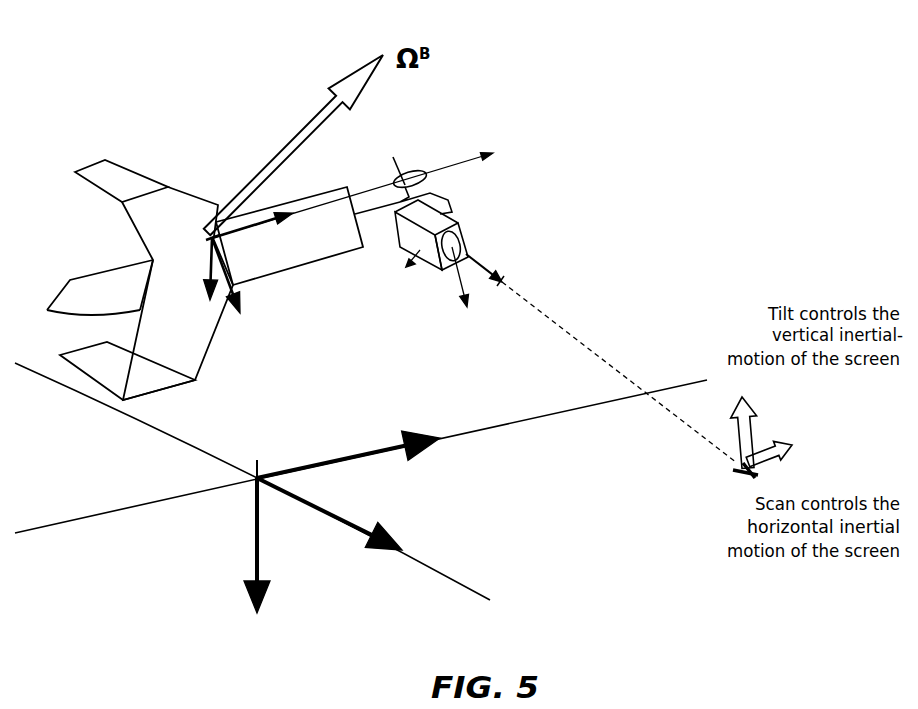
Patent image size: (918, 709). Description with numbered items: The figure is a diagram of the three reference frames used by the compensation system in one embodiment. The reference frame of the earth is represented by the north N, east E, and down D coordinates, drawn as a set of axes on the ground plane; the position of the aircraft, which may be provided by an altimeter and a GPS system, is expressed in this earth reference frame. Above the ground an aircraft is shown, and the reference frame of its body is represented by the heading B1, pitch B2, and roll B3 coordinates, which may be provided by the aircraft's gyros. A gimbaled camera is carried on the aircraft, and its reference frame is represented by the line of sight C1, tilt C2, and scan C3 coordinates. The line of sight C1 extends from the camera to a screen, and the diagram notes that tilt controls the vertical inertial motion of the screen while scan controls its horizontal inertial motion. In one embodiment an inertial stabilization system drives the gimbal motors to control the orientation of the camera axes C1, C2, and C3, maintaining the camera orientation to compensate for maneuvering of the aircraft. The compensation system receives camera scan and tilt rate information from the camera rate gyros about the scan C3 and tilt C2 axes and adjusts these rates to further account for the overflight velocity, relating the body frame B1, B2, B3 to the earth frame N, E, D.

The heading coordinate B1 is at (266, 221).
The pitch coordinate B2 is at (203, 290).
The roll coordinate B3 is at (238, 295).
The line of sight coordinate C1 is at (601, 358).
The tilt coordinate C2 is at (352, 228).
The scan coordinate C3 is at (505, 304).
The north coordinate N is at (362, 452).
The east coordinate E is at (337, 514).
The down coordinate D is at (269, 545).